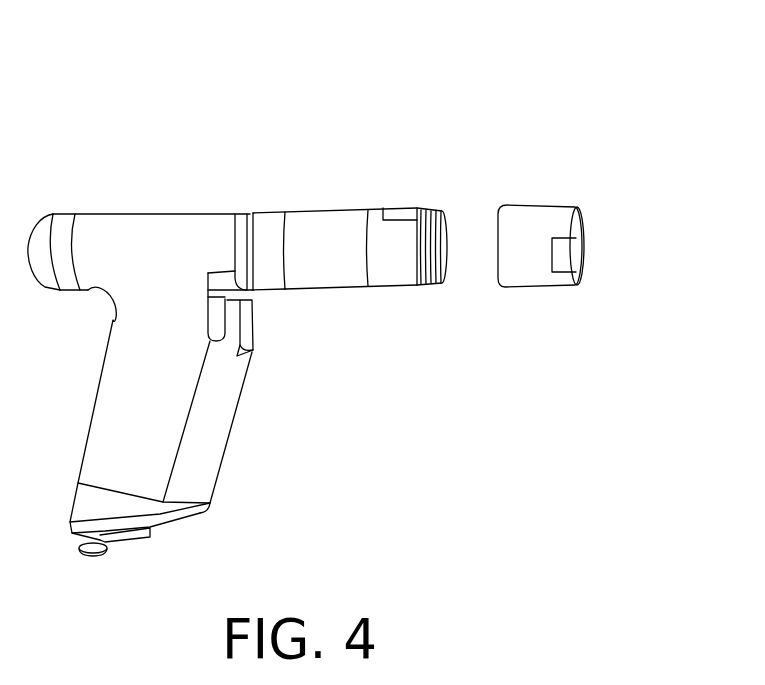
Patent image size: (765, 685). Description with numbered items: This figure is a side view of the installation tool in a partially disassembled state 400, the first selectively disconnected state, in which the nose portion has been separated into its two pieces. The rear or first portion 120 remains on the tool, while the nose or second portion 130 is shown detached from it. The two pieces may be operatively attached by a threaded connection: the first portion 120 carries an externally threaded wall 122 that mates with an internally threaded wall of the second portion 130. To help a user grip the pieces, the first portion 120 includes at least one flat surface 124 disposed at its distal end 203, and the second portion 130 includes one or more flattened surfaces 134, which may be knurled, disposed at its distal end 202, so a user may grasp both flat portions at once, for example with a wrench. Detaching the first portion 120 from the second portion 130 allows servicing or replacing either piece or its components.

The partially disassembled state 400 is at (587, 66).
The first portion 120 is at (302, 217).
The flat surface 124 is at (405, 208).
The externally threaded wall 122 is at (433, 208).
The second portion 130 is at (553, 220).
The distal end of the second portion 202 is at (583, 253).
The flattened surface 134 is at (575, 260).
The distal end of the first portion 203 is at (418, 285).